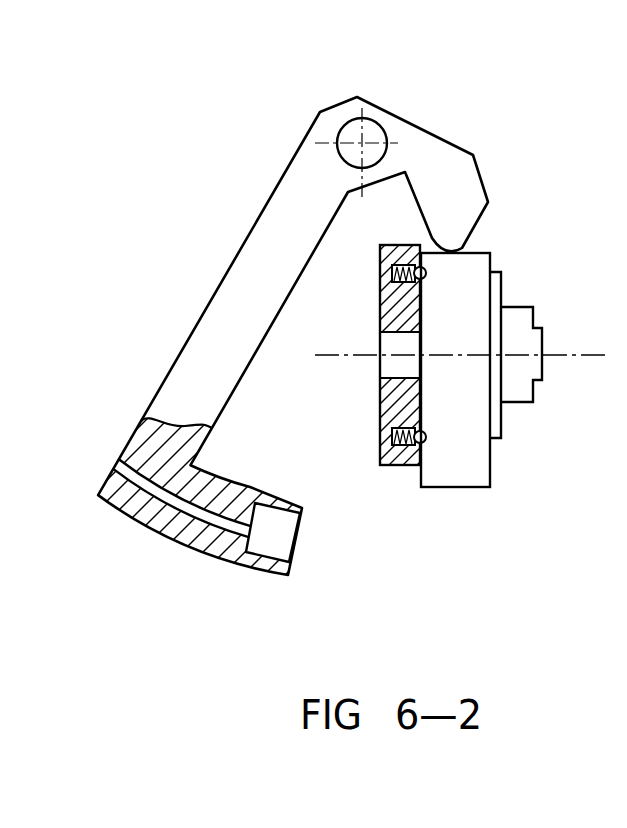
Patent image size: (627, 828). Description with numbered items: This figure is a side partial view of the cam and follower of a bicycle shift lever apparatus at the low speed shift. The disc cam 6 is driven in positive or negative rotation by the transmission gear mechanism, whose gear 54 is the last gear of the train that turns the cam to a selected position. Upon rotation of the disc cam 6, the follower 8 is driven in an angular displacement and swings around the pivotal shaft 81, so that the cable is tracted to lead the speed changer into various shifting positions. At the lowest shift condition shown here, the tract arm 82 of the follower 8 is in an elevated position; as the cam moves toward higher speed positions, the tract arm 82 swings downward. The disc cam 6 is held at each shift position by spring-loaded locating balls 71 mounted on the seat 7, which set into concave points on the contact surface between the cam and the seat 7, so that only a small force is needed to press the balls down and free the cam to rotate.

The disc cam 6 is at (473, 427).
The seat 7 is at (393, 405).
The follower 8 is at (438, 158).
The gear 54 is at (520, 320).
The spring-loaded locating balls 71 is at (427, 435).
The pivotal shaft 81 is at (347, 135).
The tract arm 82 is at (197, 357).